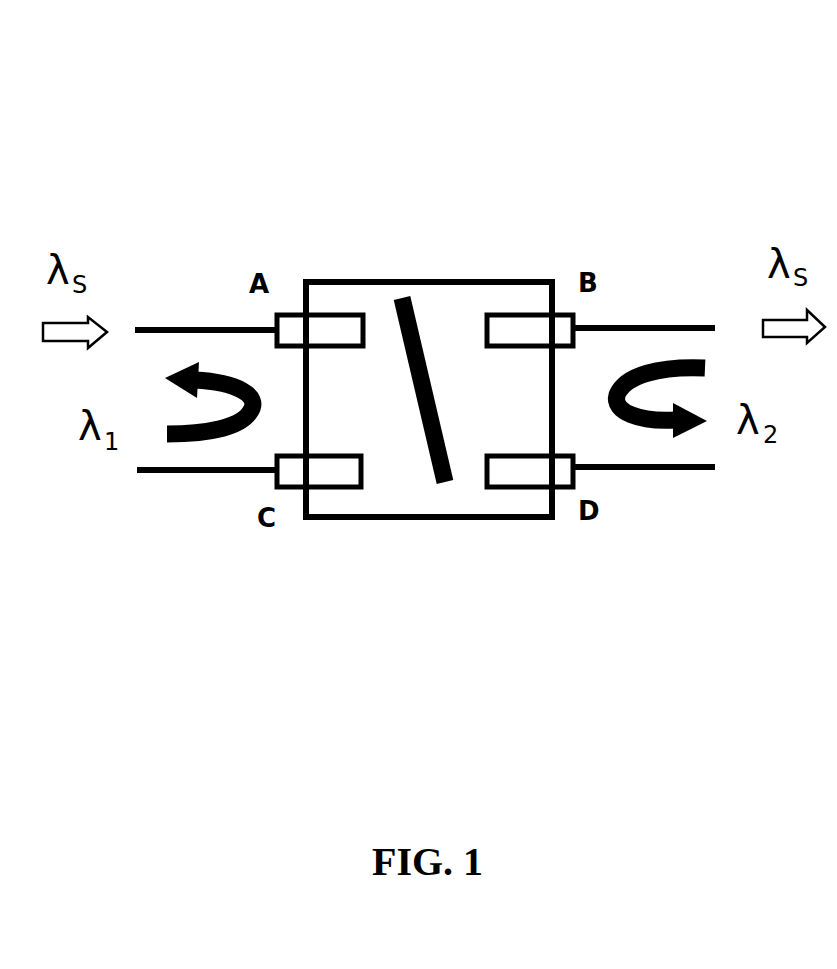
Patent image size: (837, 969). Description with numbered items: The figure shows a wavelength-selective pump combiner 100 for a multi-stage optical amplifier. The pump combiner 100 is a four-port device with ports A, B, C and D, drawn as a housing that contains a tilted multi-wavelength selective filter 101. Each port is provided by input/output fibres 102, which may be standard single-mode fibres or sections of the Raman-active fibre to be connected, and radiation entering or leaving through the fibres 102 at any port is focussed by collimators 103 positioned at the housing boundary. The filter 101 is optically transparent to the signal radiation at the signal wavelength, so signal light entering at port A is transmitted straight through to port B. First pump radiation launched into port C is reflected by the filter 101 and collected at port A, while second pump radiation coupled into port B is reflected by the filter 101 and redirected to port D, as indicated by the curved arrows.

The wavelength-selective pump combiner 100 is at (471, 182).
The multi-wavelength selective filter 101 is at (423, 338).
The input/output fibres 102 is at (167, 328).
The collimators 103 is at (295, 318).